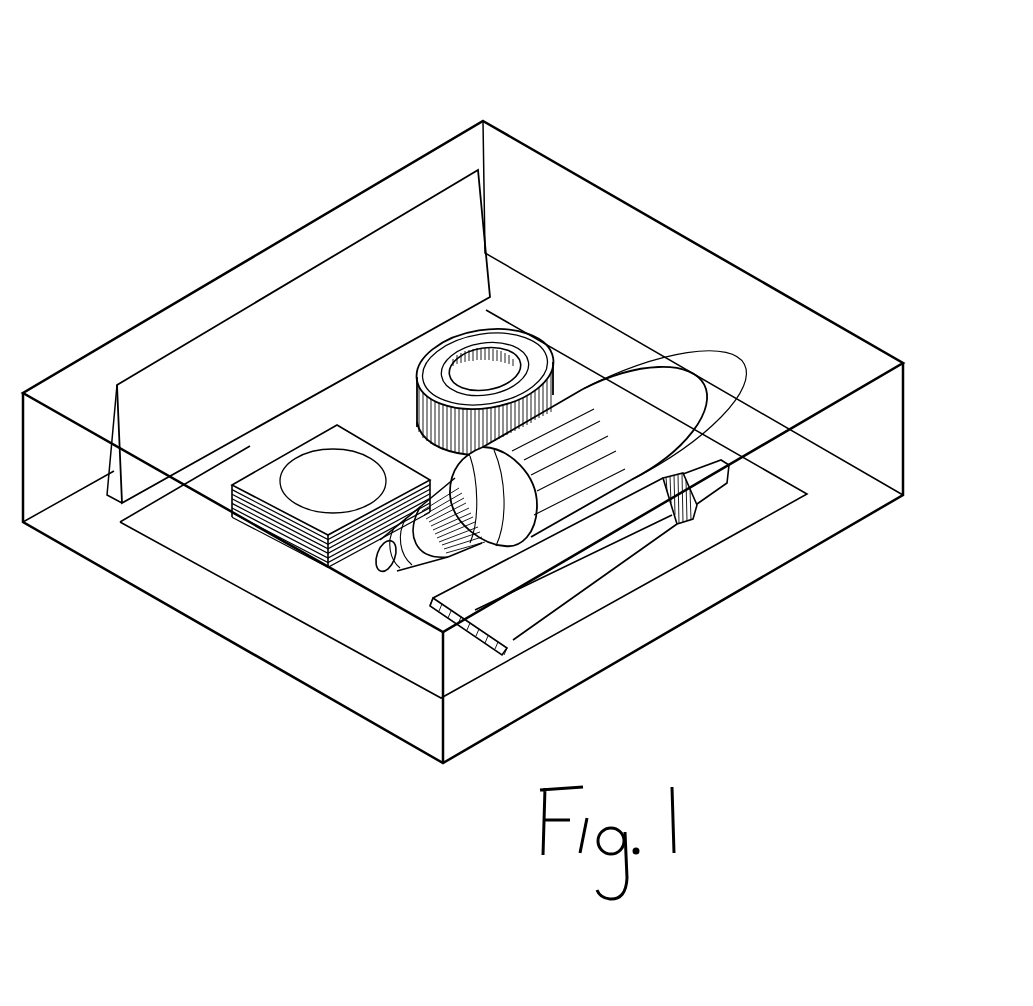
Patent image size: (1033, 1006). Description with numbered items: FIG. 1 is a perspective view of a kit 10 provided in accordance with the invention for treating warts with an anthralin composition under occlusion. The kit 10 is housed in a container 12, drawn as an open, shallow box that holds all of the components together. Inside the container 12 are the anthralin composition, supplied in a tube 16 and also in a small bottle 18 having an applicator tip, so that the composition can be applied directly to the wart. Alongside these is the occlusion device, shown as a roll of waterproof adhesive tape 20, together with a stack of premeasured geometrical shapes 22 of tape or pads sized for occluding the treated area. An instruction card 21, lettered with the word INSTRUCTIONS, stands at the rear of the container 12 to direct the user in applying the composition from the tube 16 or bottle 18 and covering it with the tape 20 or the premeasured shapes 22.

The kit 10 is at (446, 299).
The container box 12 is at (632, 207).
The tube of ointment 16 is at (593, 532).
The bottle 18 is at (602, 390).
The roll of tape 20 is at (420, 402).
The instruction card 21 is at (194, 356).
The stack of pads 22 is at (262, 480).